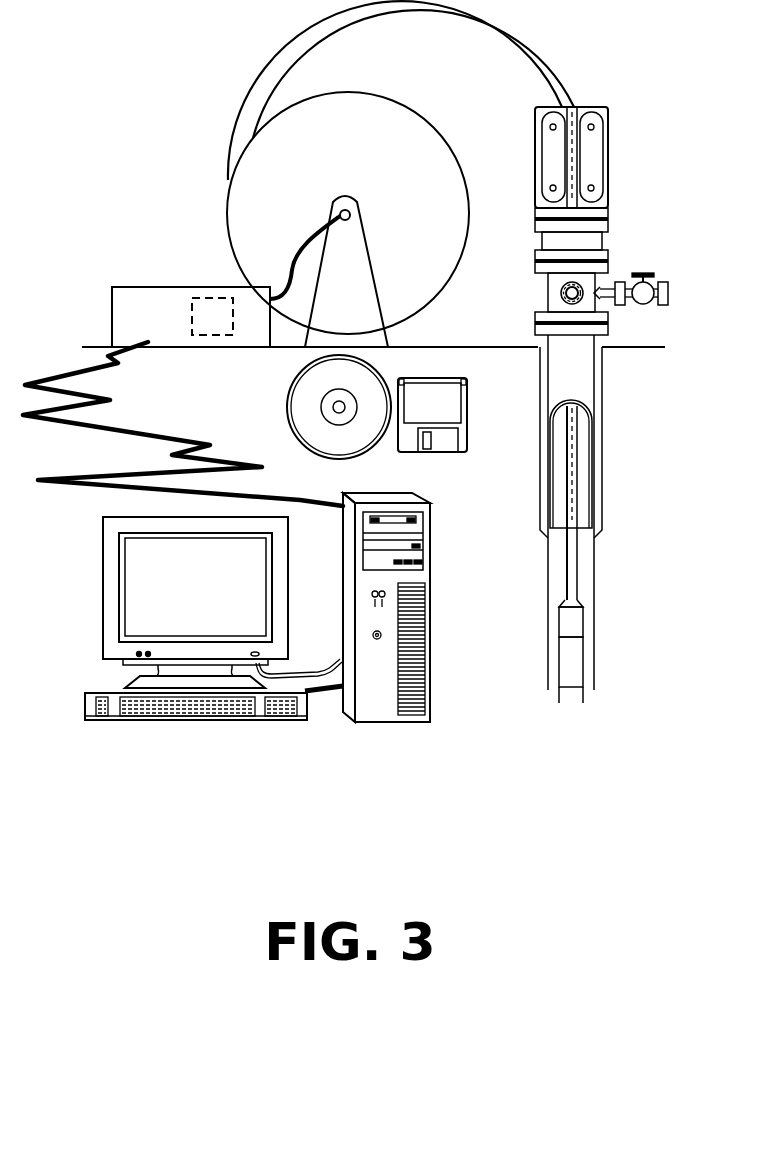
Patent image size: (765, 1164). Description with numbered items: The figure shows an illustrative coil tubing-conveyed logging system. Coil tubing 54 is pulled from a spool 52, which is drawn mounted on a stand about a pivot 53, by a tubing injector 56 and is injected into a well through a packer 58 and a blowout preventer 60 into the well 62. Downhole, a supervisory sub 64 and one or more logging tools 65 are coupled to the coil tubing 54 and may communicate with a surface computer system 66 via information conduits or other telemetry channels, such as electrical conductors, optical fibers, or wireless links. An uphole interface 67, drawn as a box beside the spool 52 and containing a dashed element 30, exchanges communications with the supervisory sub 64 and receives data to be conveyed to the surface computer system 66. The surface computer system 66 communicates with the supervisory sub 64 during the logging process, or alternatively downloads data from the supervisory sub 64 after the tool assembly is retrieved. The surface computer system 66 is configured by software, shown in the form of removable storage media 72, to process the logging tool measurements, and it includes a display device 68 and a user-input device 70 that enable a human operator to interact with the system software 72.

The controller 30 is at (198, 298).
The spool 52 is at (317, 175).
The pivot 53 is at (349, 211).
The coil tubing 54 is at (278, 70).
The tubing injector 56 is at (606, 140).
The packer 58 is at (606, 238).
The blowout preventer 60 is at (545, 293).
The well 62 is at (600, 397).
The supervisory sub 64 is at (585, 618).
The logging tool 65 is at (585, 668).
The surface computer system 66 is at (343, 630).
The uphole interface 67 is at (162, 286).
The display device 68 is at (115, 660).
The user-input device 70 is at (112, 720).
The removable storage media 72 is at (398, 452).